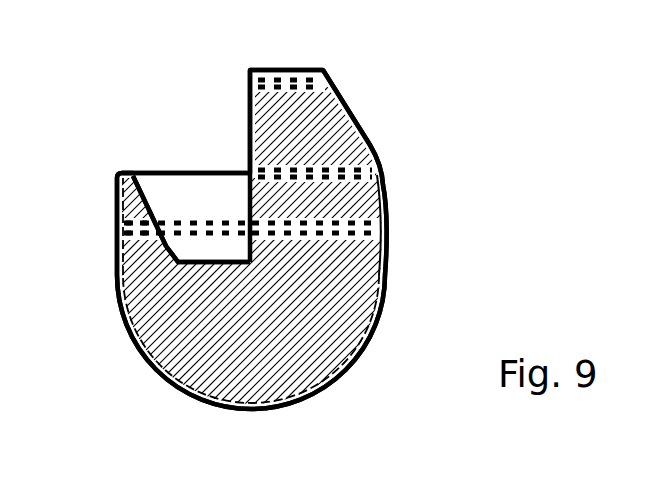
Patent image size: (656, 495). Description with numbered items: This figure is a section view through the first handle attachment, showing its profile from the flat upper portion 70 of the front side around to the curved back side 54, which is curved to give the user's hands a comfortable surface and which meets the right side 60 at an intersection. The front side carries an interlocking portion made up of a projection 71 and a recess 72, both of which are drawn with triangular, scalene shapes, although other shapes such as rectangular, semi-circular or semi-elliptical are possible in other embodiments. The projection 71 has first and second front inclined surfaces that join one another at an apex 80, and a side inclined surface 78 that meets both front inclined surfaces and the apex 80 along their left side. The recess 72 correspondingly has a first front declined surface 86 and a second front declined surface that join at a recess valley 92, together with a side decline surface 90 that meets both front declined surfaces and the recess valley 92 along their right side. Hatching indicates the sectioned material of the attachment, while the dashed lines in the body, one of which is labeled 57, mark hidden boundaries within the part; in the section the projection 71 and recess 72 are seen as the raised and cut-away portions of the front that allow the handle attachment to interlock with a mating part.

The back side 54 is at (258, 410).
The dashed fold line 57 is at (343, 228).
The right side 60 is at (383, 200).
The upper portion 70 is at (120, 194).
The projection 71 is at (383, 118).
The recess 72 is at (150, 125).
The side inclined surface 78 is at (333, 88).
The apex 80 is at (293, 72).
The first front declined surface 86 is at (192, 193).
The side decline surface 90 is at (152, 200).
The recess valley 92 is at (210, 170).